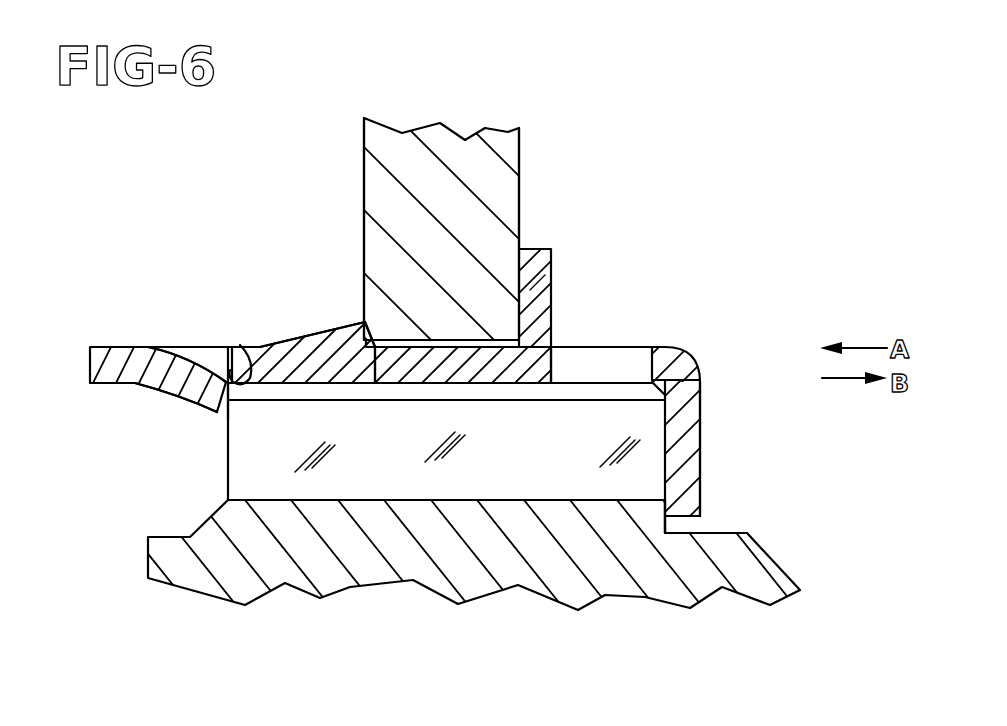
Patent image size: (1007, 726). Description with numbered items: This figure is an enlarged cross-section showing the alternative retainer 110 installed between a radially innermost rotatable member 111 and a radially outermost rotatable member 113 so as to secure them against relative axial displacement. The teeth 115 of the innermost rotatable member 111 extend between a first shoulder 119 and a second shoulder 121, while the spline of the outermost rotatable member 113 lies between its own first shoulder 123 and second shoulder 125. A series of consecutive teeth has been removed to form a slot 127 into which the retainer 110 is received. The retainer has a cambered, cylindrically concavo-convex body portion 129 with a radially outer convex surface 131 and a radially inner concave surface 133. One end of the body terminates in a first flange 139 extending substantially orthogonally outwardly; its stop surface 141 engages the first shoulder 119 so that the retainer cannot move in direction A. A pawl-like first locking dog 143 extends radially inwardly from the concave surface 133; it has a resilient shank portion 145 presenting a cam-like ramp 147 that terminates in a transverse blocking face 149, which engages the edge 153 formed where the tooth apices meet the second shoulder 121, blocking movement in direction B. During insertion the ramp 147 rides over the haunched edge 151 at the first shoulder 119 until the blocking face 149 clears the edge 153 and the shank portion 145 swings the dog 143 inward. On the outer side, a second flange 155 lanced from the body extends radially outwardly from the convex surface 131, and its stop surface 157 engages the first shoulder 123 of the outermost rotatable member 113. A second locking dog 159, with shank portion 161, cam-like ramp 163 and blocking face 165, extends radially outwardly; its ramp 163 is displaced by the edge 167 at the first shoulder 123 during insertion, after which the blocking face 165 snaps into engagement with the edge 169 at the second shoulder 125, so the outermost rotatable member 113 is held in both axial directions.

The retainer 110 is at (785, 431).
The innermost rotatable member 111 is at (345, 598).
The outermost rotatable member 113 is at (505, 128).
The teeth 115 is at (533, 485).
The first shoulder 119 is at (667, 493).
The second shoulder 121 is at (228, 455).
The first shoulder 123 is at (519, 195).
The second shoulder 125 is at (365, 172).
The slot 127 is at (460, 333).
The body portion 129 is at (690, 352).
The radially outer convex surface 131 is at (582, 347).
The radially inner concave surface 133 is at (478, 384).
The first flange 139 is at (692, 468).
The stop surface 141 is at (664, 462).
The first locking dog 143 is at (163, 355).
The shank portion 145 is at (155, 375).
The cam-like ramp 147 is at (200, 406).
The blocking face 149 is at (228, 412).
The edge 151 is at (698, 378).
The edge 153 is at (240, 345).
The second flange 155 is at (541, 312).
The stop surface 157 is at (524, 292).
The second locking dog 159 is at (332, 333).
The shank portion 161 is at (292, 350).
The cam-like ramp 163 is at (312, 345).
The blocking face 165 is at (374, 333).
The edge 167 is at (520, 352).
The edge 169 is at (340, 350).